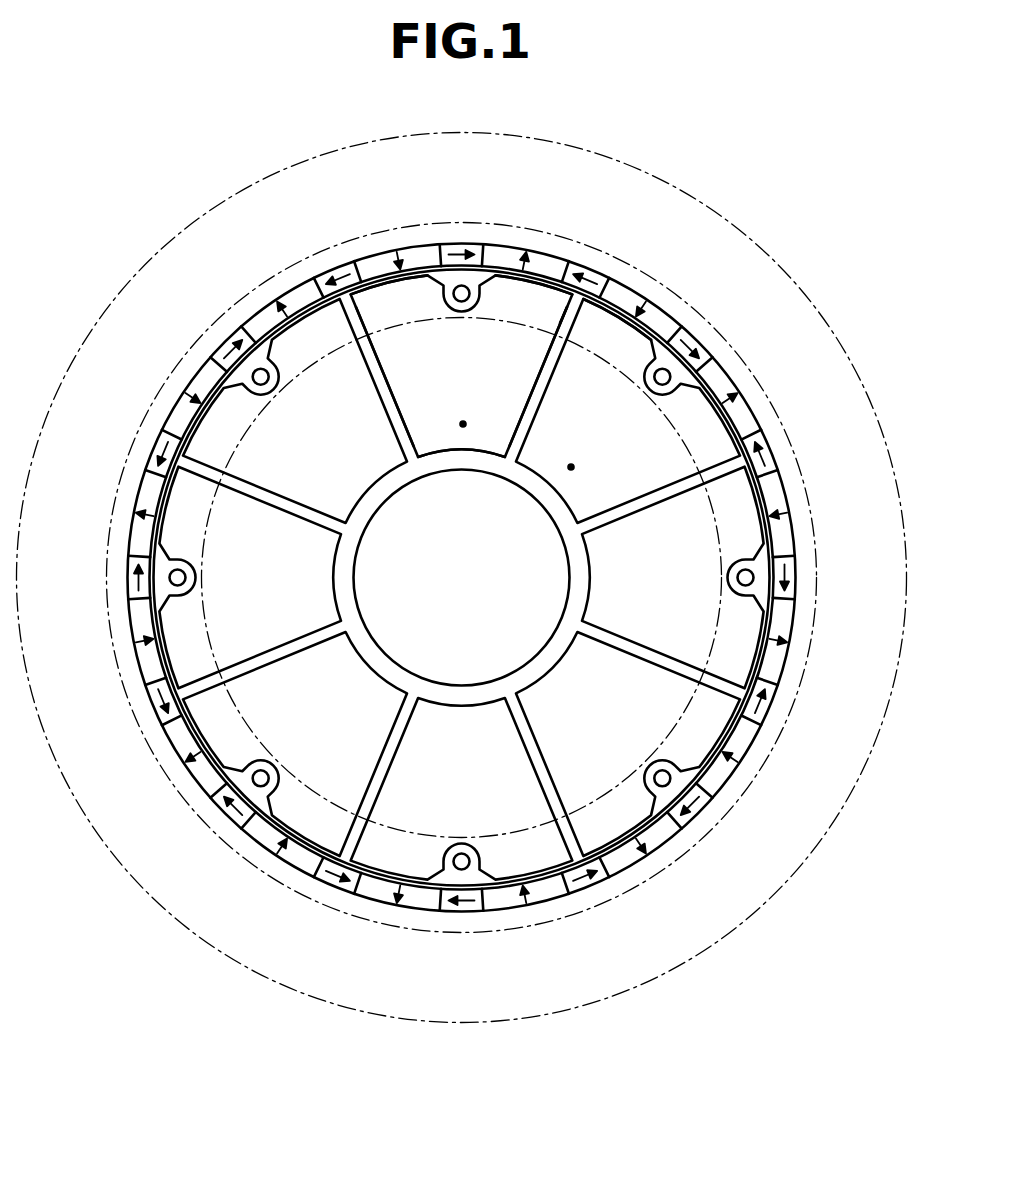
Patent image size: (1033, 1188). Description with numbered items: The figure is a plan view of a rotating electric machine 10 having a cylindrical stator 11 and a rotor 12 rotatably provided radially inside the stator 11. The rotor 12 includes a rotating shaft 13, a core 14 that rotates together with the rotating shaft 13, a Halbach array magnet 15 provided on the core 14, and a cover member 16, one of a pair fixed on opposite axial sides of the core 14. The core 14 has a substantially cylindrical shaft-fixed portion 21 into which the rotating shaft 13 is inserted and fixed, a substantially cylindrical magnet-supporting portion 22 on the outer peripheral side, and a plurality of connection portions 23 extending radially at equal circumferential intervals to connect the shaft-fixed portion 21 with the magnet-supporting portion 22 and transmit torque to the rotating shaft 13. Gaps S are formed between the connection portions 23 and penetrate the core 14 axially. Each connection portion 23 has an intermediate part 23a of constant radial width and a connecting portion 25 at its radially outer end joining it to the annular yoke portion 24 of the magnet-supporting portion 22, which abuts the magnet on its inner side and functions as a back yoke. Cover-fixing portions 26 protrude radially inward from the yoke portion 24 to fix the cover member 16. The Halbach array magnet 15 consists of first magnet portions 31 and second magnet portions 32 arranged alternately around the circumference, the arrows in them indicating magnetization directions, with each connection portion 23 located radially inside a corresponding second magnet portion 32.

The rotating electric machine 10 is at (757, 163).
The stator 11 is at (638, 167).
The rotor 12 is at (747, 369).
The rotating shaft 13 is at (372, 572).
The core 14 is at (297, 292).
The Halbach array magnet 15 is at (462, 554).
The cover member 16 is at (233, 444).
The shaft-fixed portion 21 is at (376, 497).
The magnet-supporting portion 22 is at (296, 320).
The connection portion 23 is at (392, 390).
The intermediate part 23a is at (538, 380).
The yoke portion 24 is at (510, 275).
The connecting portion 25 is at (363, 295).
The cover-fixing portion 26 is at (463, 312).
The first magnet portion 31 is at (425, 248).
The second magnet portion 32 is at (462, 246).
The gap S is at (463, 426).